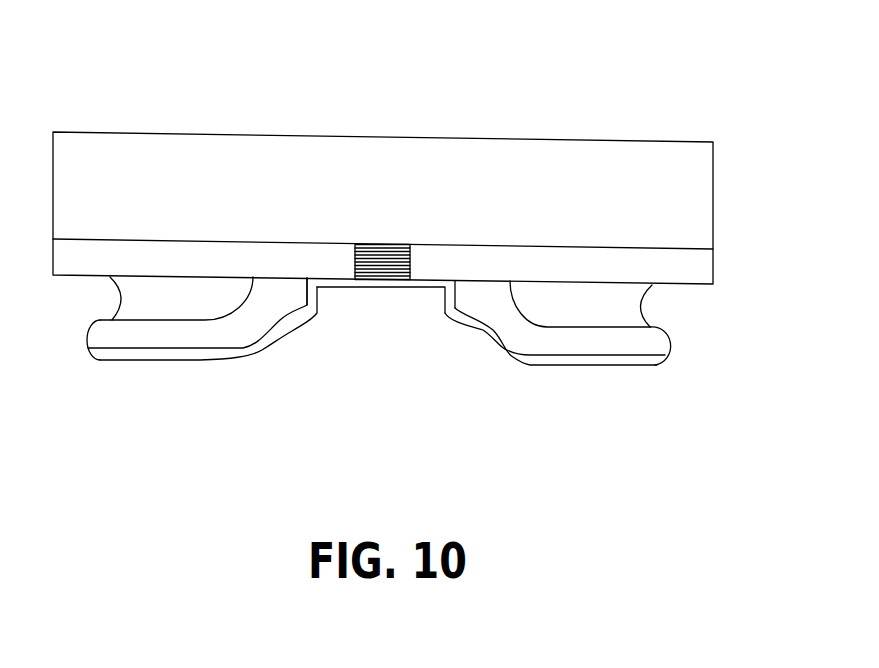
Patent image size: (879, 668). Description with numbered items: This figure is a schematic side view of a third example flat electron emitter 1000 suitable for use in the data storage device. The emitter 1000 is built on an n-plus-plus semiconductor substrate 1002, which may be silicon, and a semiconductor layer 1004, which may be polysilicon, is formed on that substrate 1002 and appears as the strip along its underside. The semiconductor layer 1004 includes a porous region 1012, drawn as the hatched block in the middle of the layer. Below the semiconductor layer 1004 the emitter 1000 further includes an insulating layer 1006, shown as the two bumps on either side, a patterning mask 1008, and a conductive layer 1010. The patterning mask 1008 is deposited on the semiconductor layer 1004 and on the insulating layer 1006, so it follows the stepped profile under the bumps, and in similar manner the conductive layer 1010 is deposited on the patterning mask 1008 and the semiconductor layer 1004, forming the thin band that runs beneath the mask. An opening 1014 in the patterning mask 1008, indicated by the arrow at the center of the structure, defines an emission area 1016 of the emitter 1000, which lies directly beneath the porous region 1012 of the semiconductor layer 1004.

The flat electron emitter 1000 is at (700, 101).
The semiconductor substrate 1002 is at (702, 194).
The semiconductor layer 1004 is at (702, 266).
The insulating layer 1006 is at (133, 295).
The patterning mask 1008 is at (95, 337).
The conductive layer 1010 is at (535, 358).
The porous region 1012 is at (395, 247).
The opening 1014 is at (412, 370).
The emission area 1016 is at (367, 292).